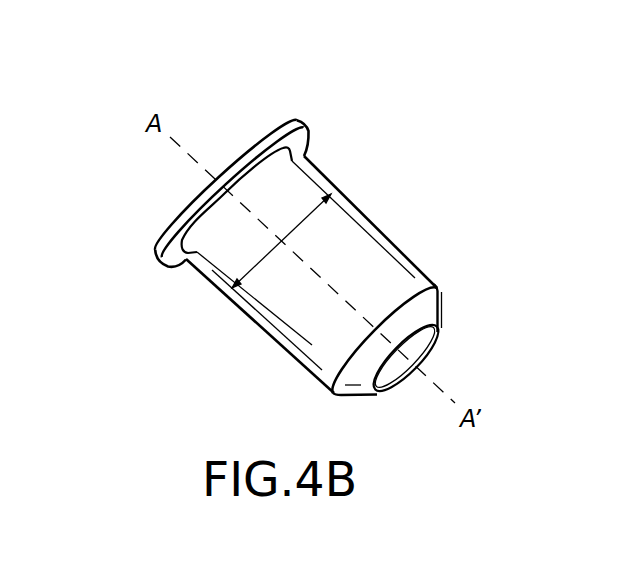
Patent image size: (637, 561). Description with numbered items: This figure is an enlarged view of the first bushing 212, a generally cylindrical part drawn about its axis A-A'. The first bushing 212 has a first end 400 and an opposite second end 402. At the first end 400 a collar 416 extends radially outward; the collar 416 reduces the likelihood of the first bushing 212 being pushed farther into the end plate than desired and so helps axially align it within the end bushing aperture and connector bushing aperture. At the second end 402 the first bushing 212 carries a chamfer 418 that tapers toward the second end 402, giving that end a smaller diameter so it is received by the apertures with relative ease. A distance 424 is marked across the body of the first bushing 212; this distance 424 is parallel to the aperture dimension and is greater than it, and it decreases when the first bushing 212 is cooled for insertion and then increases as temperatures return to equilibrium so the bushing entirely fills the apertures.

The first end 400 is at (310, 257).
The collar 416 is at (295, 121).
The first bushing 212 is at (383, 232).
The chamfer 418 is at (438, 312).
The second end 402 is at (385, 390).
The distance 424 is at (226, 281).